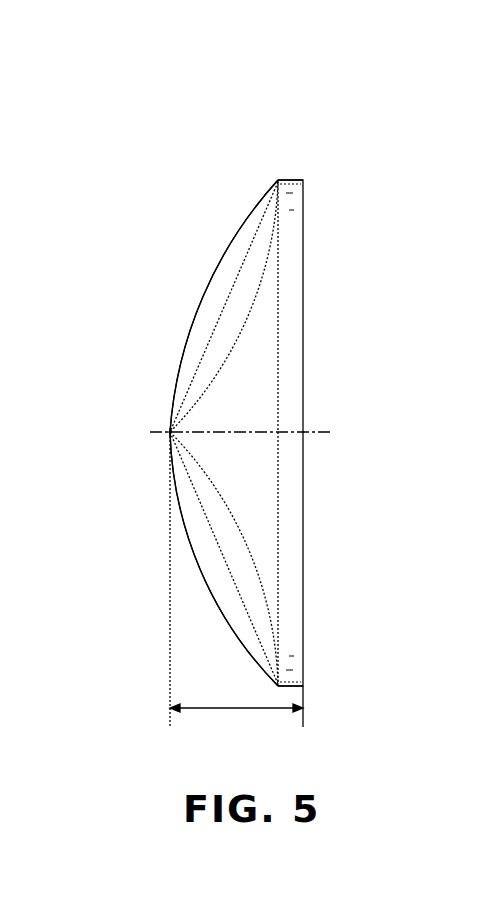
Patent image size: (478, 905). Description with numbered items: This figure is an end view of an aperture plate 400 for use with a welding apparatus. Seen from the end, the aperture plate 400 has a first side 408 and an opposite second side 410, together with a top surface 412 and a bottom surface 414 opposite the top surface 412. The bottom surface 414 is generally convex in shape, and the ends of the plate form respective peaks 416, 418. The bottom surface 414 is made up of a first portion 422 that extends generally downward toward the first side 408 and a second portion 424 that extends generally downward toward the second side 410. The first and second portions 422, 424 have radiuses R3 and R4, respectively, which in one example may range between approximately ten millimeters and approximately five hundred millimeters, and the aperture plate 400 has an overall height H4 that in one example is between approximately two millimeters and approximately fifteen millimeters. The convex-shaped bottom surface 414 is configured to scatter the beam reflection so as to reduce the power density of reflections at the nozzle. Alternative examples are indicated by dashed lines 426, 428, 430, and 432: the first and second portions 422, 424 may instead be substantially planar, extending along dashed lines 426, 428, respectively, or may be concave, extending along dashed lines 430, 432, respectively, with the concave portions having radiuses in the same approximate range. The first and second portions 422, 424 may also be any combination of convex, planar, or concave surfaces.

The aperture plate 400 is at (238, 413).
The first side 408 is at (290, 687).
The second side 410 is at (290, 180).
The top surface 412 is at (303, 615).
The bottom surface 414 is at (185, 433).
The peak 416 is at (170, 432).
The peak 418 is at (121, 467).
The first portion 422 is at (205, 580).
The second portion 424 is at (205, 298).
The dashed line 426 is at (238, 590).
The dashed line 428 is at (238, 275).
The dashed line 430 is at (235, 528).
The dashed line 432 is at (233, 340).
The radius R3 is at (183, 535).
The radius R4 is at (224, 238).
The overall height H4 is at (238, 711).